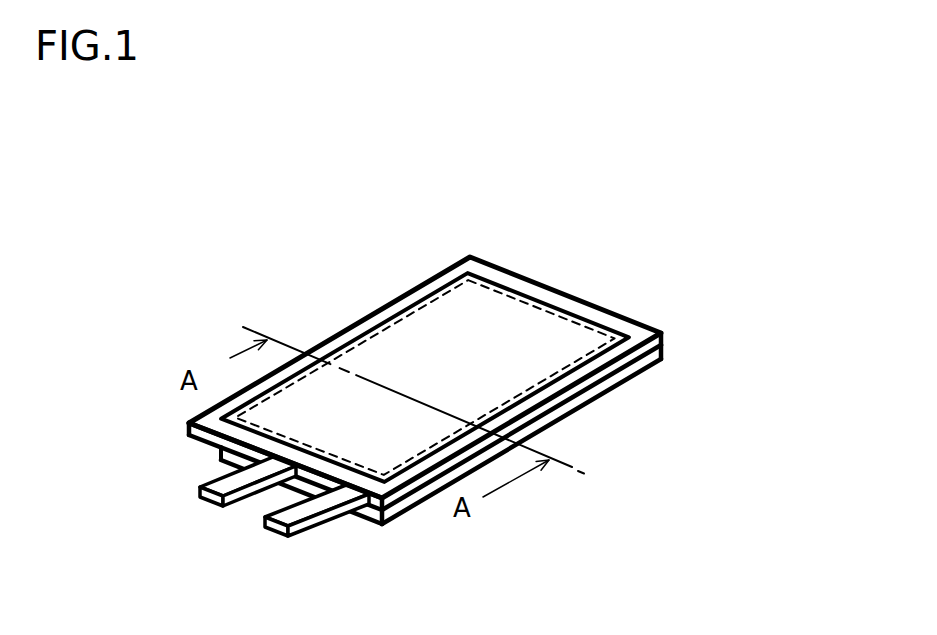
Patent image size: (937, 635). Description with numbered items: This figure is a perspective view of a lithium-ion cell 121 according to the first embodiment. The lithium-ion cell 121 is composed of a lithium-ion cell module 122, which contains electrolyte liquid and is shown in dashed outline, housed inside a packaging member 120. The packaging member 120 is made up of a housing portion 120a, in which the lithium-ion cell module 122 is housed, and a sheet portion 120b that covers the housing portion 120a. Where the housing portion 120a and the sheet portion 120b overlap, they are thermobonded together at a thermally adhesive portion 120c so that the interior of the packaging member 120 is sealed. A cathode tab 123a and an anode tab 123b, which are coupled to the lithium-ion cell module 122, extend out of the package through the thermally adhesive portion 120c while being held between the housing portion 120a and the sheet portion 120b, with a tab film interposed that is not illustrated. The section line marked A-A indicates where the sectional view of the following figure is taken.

The packaging member 120 is at (496, 331).
The housing portion 120a is at (549, 420).
The sheet portion 120b is at (393, 304).
The thermally adhesive portion 120c is at (636, 368).
The lithium-ion cell 121 is at (450, 357).
The lithium-ion cell module 122 is at (558, 322).
The cathode tab 123a is at (208, 476).
The anode tab 123b is at (305, 522).